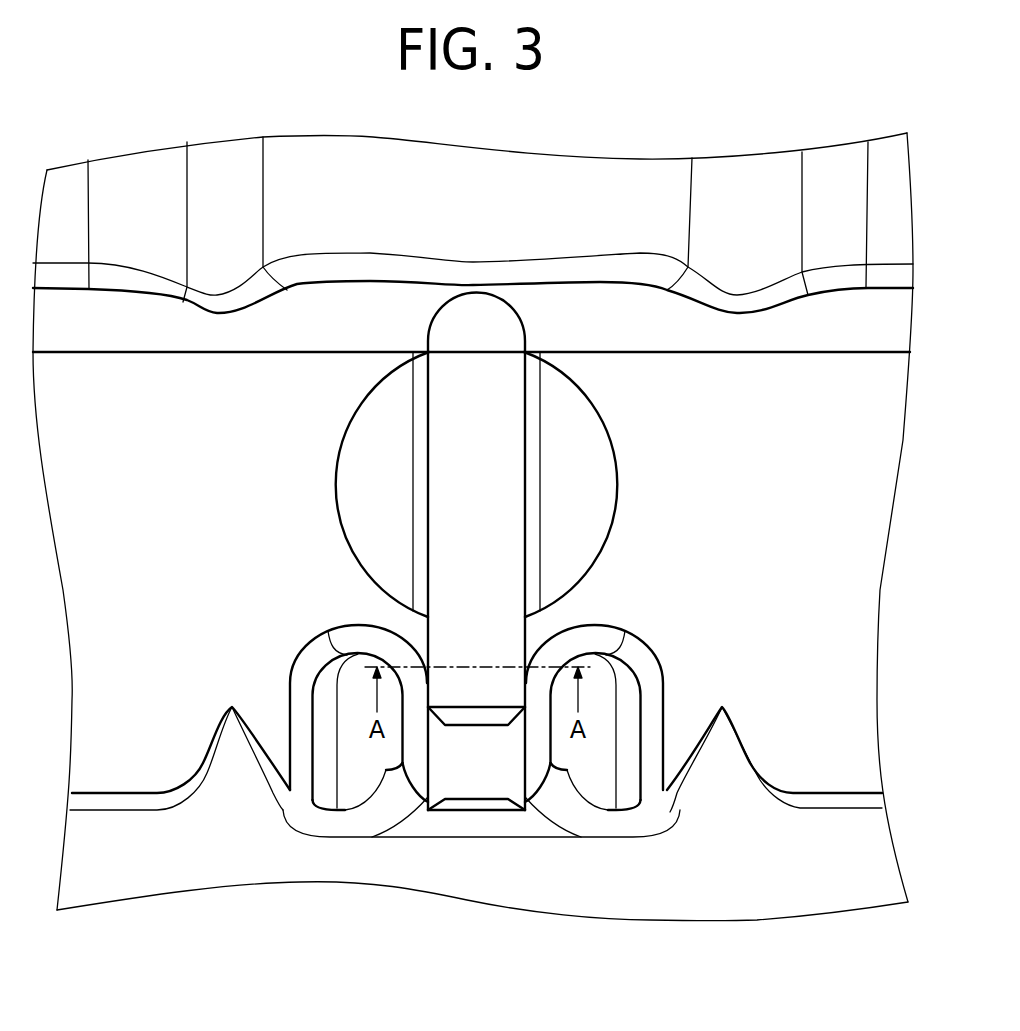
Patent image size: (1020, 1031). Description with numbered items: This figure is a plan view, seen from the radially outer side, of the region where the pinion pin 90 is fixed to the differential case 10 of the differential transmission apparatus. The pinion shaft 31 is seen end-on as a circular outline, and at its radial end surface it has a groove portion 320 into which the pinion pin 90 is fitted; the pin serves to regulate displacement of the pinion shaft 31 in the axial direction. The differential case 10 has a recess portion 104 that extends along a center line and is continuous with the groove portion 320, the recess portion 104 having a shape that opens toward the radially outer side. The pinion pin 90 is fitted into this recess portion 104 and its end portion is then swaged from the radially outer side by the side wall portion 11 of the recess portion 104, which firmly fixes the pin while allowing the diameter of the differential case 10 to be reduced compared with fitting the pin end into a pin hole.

The differential case 10 is at (837, 632).
The side wall portion 11 is at (423, 638).
The pinion shaft 31 is at (582, 485).
The groove portion 320 is at (527, 515).
The pinion pin 90 is at (497, 583).
The recess portion 104 is at (483, 747).